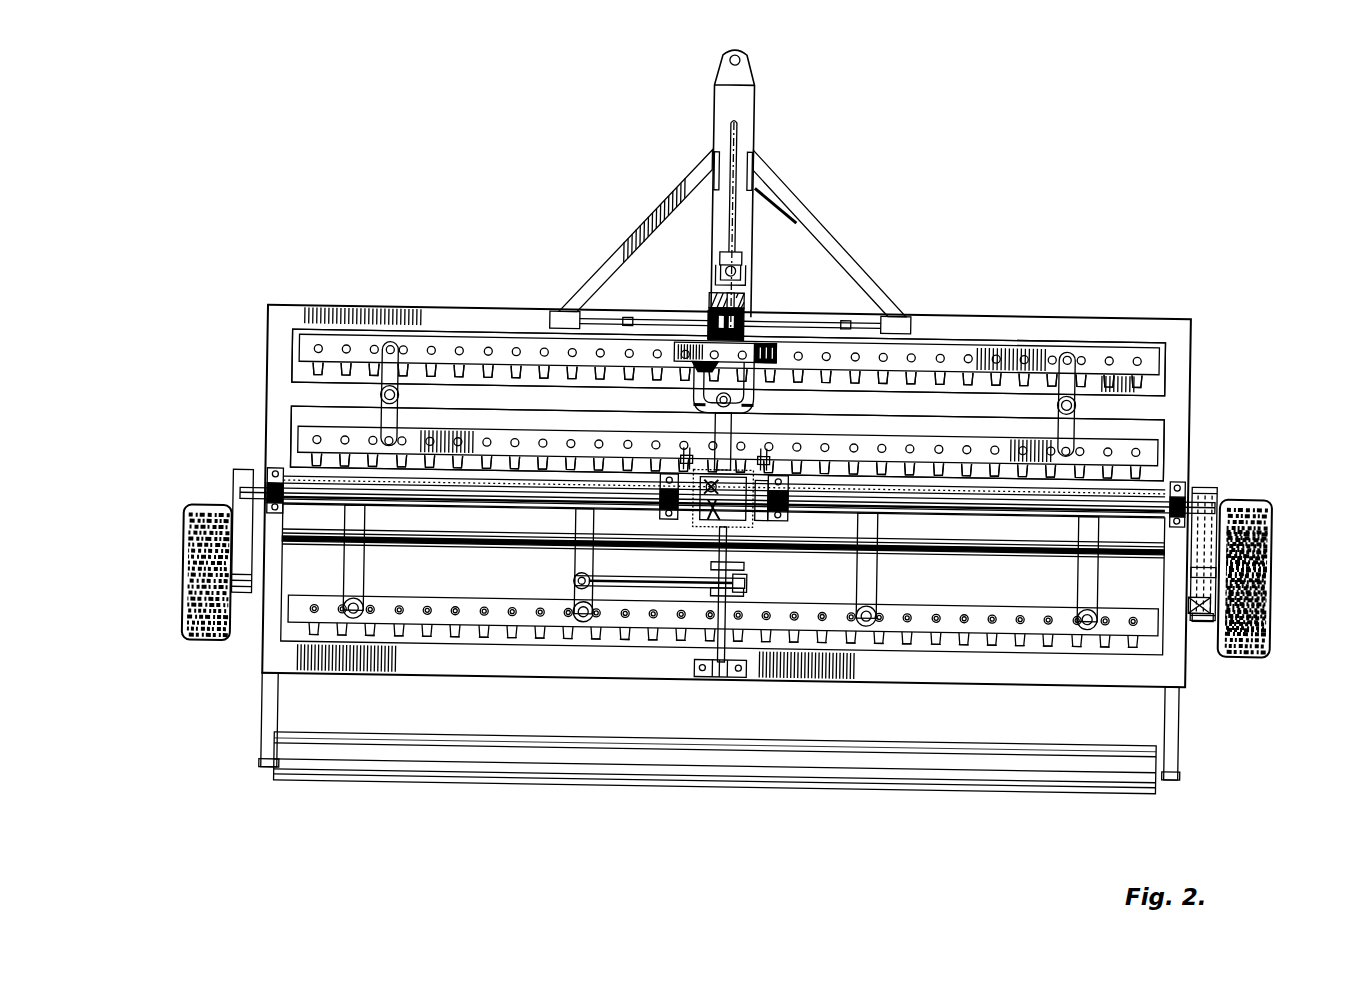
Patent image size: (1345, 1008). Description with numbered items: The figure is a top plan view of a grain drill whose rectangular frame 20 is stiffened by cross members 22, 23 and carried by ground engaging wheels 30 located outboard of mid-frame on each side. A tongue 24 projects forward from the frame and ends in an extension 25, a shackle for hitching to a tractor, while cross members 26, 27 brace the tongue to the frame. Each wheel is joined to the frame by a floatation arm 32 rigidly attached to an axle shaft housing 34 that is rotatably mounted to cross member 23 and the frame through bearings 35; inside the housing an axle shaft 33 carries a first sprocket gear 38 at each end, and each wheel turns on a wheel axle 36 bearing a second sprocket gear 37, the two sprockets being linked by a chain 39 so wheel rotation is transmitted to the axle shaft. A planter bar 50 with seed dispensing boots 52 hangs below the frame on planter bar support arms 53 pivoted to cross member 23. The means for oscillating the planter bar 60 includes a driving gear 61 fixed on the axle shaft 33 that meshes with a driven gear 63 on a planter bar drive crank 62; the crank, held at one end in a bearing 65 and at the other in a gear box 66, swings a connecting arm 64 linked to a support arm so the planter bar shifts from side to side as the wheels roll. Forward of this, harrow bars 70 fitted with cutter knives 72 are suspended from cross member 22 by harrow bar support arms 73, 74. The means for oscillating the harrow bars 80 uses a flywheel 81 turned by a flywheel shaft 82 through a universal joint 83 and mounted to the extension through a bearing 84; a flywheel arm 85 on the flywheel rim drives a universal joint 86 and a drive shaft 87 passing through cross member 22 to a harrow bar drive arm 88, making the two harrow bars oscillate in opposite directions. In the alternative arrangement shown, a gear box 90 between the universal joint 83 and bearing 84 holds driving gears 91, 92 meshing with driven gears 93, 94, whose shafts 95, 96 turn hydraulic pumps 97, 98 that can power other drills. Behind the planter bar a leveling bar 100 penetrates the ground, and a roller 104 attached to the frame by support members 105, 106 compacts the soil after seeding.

The frame 20 is at (300, 302).
The cross member 22 is at (305, 392).
The cross member 23 is at (295, 475).
The tongue 24 is at (748, 98).
The extension 25 is at (742, 58).
The cross member 26 is at (766, 175).
The cross member 27 is at (688, 180).
The ground engaging wheel 30 is at (190, 515).
The floatation arm 32 is at (236, 497).
The axle shaft 33 is at (1182, 492).
The axle shaft housing 34 is at (494, 494).
The bearing 35 is at (268, 480).
The wheel axle 36 is at (1206, 620).
The second sprocket gear 37 is at (1192, 598).
The first sprocket gear 38 is at (1216, 511).
The chain 39 is at (1192, 569).
The planter bar 50 is at (965, 612).
The seed dispensing boot 52 is at (400, 641).
The planter bar support arm 53 is at (366, 522).
The means for oscillating the planter bar 60 is at (755, 566).
The driving gear 61 is at (700, 517).
The planter bar drive crank 62 is at (718, 558).
The driven gear 63 is at (710, 520).
The connecting arm 64 is at (608, 583).
The bearing 65 is at (722, 678).
The gear box 66 is at (770, 514).
The harrow bar 70 is at (953, 352).
The cutter knife 72 is at (1145, 388).
The harrow bar support arm 73 is at (1070, 385).
The harrow bar support arm 74 is at (383, 380).
The means for oscillating the harrow bars 80 is at (675, 357).
The flywheel 81 is at (780, 352).
The flywheel shaft 82 is at (735, 137).
The universal joint 83 is at (742, 258).
The bearing 84 is at (746, 288).
The flywheel arm 85 is at (697, 365).
The universal joint 86 is at (753, 380).
The drive shaft 87 is at (713, 432).
The harrow bar drive arm 88 is at (733, 432).
The gear box 90 is at (745, 310).
The driving gear 91 is at (713, 318).
The driving gear 92 is at (700, 335).
The driven gear 93 is at (716, 328).
The driven gear 94 is at (745, 330).
The shaft 95 is at (626, 318).
The shaft 96 is at (842, 322).
The hydraulic pump 97 is at (565, 313).
The hydraulic pump 98 is at (890, 315).
The leveling bar 100 is at (450, 549).
The roller 104 is at (677, 765).
The support member 105 is at (1180, 722).
The support member 106 is at (263, 705).